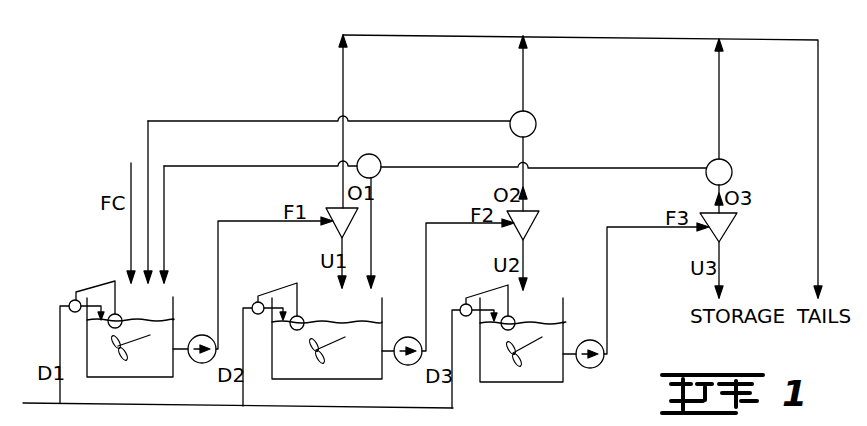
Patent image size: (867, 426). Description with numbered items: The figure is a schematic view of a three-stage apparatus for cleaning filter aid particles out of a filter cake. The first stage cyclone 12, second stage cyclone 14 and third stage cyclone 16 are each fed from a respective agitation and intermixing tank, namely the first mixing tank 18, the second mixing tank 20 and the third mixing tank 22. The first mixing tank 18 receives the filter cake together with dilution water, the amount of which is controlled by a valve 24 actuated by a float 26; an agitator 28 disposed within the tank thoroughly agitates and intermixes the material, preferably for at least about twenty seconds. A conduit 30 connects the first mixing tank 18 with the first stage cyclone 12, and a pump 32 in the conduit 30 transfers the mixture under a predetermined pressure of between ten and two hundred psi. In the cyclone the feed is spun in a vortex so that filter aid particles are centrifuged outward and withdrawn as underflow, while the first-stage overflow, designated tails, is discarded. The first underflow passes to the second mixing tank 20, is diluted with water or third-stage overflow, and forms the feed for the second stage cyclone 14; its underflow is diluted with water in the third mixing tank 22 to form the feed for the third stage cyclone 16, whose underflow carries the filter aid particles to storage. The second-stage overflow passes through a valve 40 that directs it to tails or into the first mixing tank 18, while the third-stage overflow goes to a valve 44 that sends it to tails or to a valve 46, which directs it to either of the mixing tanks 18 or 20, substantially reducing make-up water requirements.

The first stage cyclone 12 is at (351, 222).
The second stage cyclone 14 is at (527, 230).
The third stage cyclone 16 is at (722, 233).
The first mixing tank 18 is at (174, 334).
The second mixing tank 20 is at (383, 340).
The third mixing tank 22 is at (564, 343).
The valve 24 is at (70, 300).
The float 26 is at (121, 317).
The agitator 28 is at (128, 349).
The conduit 30 is at (222, 222).
The pump 32 is at (203, 363).
The valve 40 is at (514, 115).
The valve 44 is at (729, 166).
The valve 46 is at (378, 159).